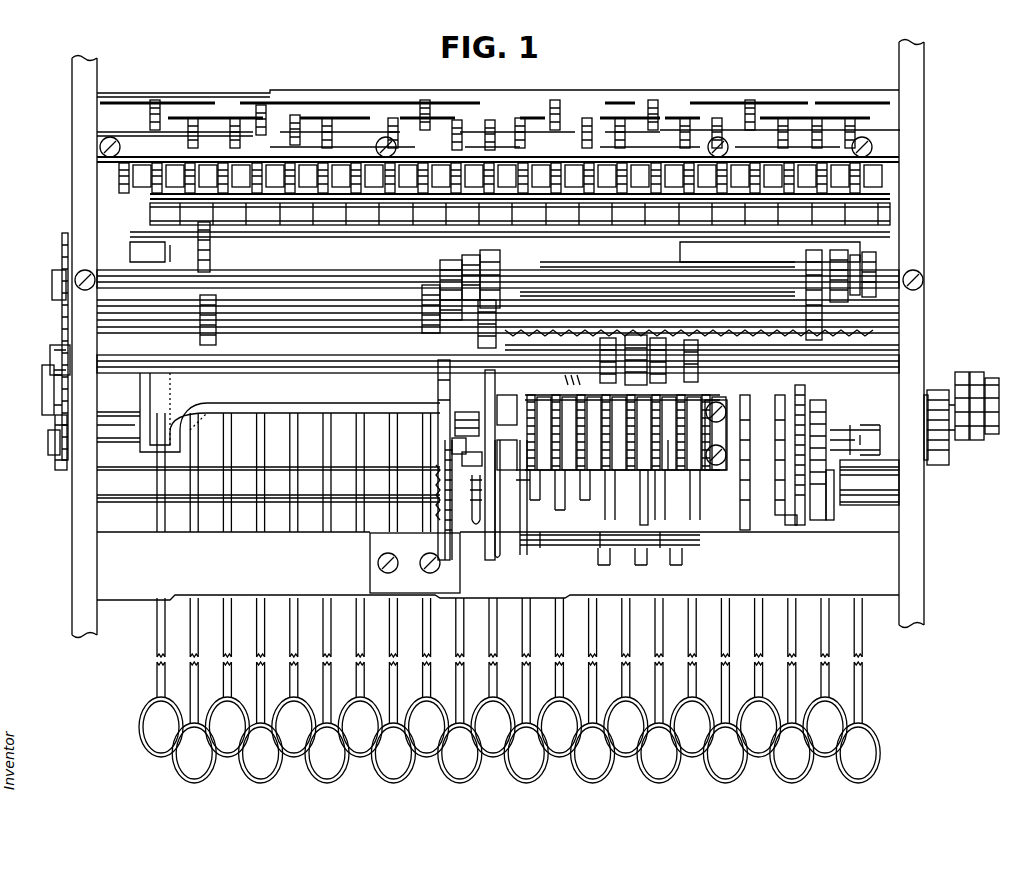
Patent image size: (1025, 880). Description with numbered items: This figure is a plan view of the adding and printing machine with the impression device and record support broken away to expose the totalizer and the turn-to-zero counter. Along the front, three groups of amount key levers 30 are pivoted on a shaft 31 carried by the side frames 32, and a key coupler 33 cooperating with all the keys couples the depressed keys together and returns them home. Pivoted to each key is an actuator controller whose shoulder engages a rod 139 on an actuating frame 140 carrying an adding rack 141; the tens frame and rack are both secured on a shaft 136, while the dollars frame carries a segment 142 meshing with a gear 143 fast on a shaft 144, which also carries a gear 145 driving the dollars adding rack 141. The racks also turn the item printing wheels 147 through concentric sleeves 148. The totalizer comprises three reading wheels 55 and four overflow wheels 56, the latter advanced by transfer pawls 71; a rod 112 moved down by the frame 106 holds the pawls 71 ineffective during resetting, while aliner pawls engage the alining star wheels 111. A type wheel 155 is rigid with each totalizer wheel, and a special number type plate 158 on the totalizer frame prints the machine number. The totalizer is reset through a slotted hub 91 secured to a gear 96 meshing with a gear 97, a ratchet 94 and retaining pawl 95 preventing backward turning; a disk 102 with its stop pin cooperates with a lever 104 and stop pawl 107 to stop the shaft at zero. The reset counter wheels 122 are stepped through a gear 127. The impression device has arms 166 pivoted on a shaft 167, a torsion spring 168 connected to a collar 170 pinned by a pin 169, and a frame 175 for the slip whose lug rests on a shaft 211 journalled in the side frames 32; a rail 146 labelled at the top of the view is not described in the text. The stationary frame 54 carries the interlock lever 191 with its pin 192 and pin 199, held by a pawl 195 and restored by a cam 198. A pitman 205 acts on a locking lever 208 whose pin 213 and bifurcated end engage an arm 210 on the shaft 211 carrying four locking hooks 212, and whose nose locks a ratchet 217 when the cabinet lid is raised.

The amount key levers 30 is at (157, 672).
The shaft 31 is at (275, 490).
The side frames 32 is at (72, 519).
The key coupler 33 is at (276, 398).
The stationary frame 54 is at (885, 540).
The reading or indicating wheels 55 is at (668, 462).
The overflow wheels 56 is at (545, 398).
The transfer pawl 71 is at (643, 485).
The slotted hub 91 is at (850, 450).
The ratchet 94 is at (800, 398).
The retaining pawl 95 is at (797, 522).
The gear 96 is at (820, 400).
The gear 97 is at (830, 495).
The disk 102 is at (488, 392).
The lever 104 is at (496, 550).
The frame 106 is at (520, 548).
The stop pawl 107 is at (482, 505).
The alining star wheels 111 is at (572, 380).
The rod 112 is at (565, 546).
The turn-to-zero counter wheels 122 is at (745, 490).
The gear 127 is at (785, 500).
The shaft 136 is at (420, 302).
The rod 139 is at (152, 212).
The actuating frame 140 is at (150, 246).
The adding rack 141 is at (716, 346).
The segment 142 is at (210, 254).
The gear 143 is at (216, 344).
The shaft 144 is at (350, 312).
The gear 145 is at (648, 327).
The top rail 146 is at (596, 100).
The item printing wheels 147 is at (977, 372).
The concentric sleeves 148 is at (934, 390).
The type wheel 155 is at (540, 372).
The special number type plate 158 is at (712, 468).
The arms 166 is at (496, 300).
The shaft 167 is at (598, 275).
The torsion spring 168 is at (845, 262).
The pin 169 is at (876, 258).
The collar 170 is at (852, 302).
The frame 175 is at (500, 262).
The lever 191 is at (438, 388).
The pin 192 is at (455, 424).
The pawl 195 is at (445, 540).
The cam 198 is at (452, 444).
The pin 199 is at (462, 458).
The pitman 205 is at (44, 386).
The locking lever 208 is at (62, 466).
The arm 210 is at (55, 358).
The shaft 211 is at (848, 357).
The locking hooks 212 is at (656, 338).
The pin 213 is at (48, 446).
The ratchet 217 is at (62, 240).